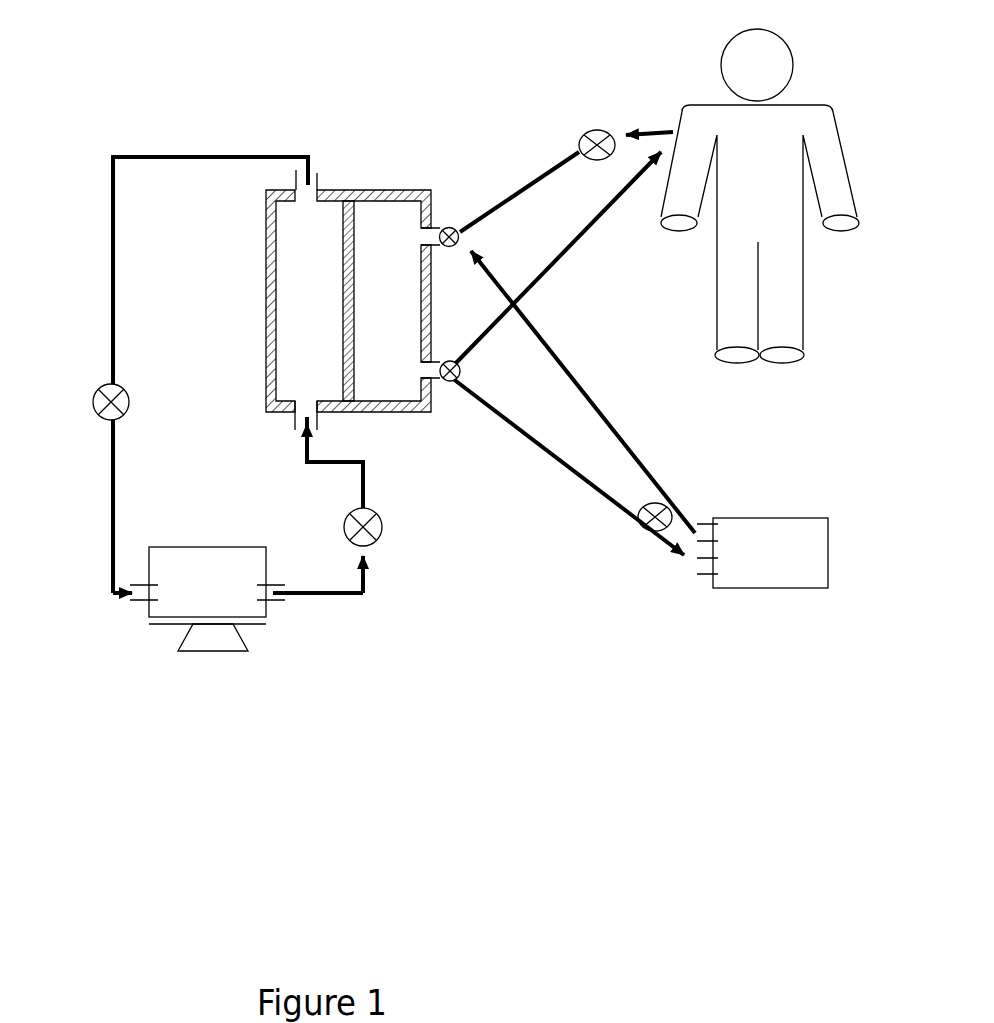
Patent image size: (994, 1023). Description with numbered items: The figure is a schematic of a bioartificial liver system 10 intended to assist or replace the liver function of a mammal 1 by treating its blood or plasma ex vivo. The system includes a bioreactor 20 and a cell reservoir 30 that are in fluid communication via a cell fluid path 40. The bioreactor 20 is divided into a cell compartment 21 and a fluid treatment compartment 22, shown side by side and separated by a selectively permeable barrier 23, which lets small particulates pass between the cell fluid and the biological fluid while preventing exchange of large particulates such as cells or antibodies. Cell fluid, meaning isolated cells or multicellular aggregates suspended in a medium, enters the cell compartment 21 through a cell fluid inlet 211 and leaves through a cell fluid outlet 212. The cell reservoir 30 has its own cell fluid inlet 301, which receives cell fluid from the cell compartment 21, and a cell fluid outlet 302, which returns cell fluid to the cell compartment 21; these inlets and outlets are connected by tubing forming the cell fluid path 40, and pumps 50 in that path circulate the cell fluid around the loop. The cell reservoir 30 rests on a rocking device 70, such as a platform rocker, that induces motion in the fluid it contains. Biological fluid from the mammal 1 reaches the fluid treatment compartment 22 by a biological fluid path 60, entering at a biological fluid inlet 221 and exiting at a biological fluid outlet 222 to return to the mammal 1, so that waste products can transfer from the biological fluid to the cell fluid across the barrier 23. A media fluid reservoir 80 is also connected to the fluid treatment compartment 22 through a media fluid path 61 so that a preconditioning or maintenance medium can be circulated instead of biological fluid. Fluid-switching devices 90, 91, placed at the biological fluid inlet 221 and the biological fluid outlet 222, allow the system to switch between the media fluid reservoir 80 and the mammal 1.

The mammal 1 is at (793, 70).
The bioartificial liver system 10 is at (243, 130).
The bioreactor 20 is at (243, 307).
The cell compartment 21 is at (309, 301).
The fluid treatment compartment 22 is at (387, 301).
The selectively permeable barrier 23 is at (353, 298).
The cell reservoir 30 is at (184, 543).
The cell fluid path 40 is at (113, 365).
The pump 50 is at (340, 527).
The biological fluid path 60 is at (538, 177).
The media fluid path 61 is at (638, 463).
The rocking device 70 is at (212, 653).
The media fluid reservoir 80 is at (770, 517).
The fluid-switching device 90 is at (463, 233).
The fluid-switching device 91 is at (460, 372).
The cell fluid inlet 211 is at (303, 430).
The cell fluid outlet 212 is at (317, 173).
The biological fluid inlet 221 is at (430, 230).
The biological fluid outlet 222 is at (420, 367).
The cell fluid inlet 301 is at (130, 600).
The cell fluid outlet 302 is at (290, 602).